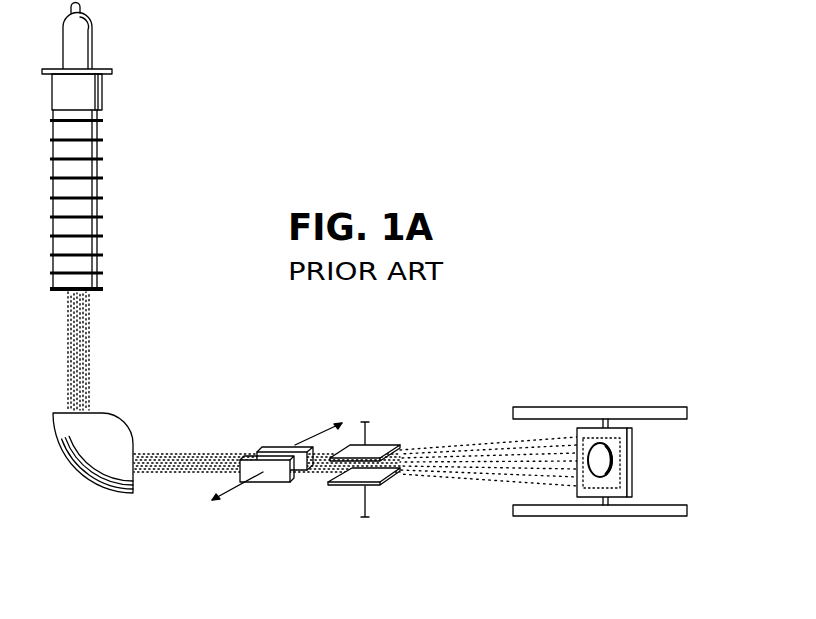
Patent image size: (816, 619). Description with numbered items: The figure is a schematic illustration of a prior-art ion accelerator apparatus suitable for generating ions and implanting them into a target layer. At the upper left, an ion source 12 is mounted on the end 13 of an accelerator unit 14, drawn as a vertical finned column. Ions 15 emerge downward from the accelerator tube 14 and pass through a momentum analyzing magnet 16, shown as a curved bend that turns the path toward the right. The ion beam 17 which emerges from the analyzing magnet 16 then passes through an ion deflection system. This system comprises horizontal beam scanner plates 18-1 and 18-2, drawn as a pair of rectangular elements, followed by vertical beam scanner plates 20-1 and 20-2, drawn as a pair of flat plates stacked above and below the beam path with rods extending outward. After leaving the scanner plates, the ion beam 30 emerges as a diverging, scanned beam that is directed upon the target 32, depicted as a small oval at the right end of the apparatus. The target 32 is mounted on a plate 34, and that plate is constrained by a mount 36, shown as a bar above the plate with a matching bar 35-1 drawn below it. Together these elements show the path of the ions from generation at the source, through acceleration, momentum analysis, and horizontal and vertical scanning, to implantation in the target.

The ion source 12 is at (98, 52).
The end of accelerator unit 13 is at (110, 71).
The accelerator unit 14 is at (90, 171).
The ions 15 is at (85, 362).
The momentum analyzing magnet 16 is at (73, 456).
The ion beam 17 is at (207, 452).
The horizontal beam scanner plate 18-1 is at (283, 479).
The horizontal beam scanner plate 18-2 is at (273, 446).
The vertical beam scanner plate 20-1 is at (378, 477).
The vertical beam scanner plate 20-2 is at (387, 444).
The ion beam 30 is at (513, 462).
The target 32 is at (607, 467).
The plate 34 is at (628, 450).
The mount 36 is at (619, 407).
The lower electrode bar 35-1 is at (637, 516).